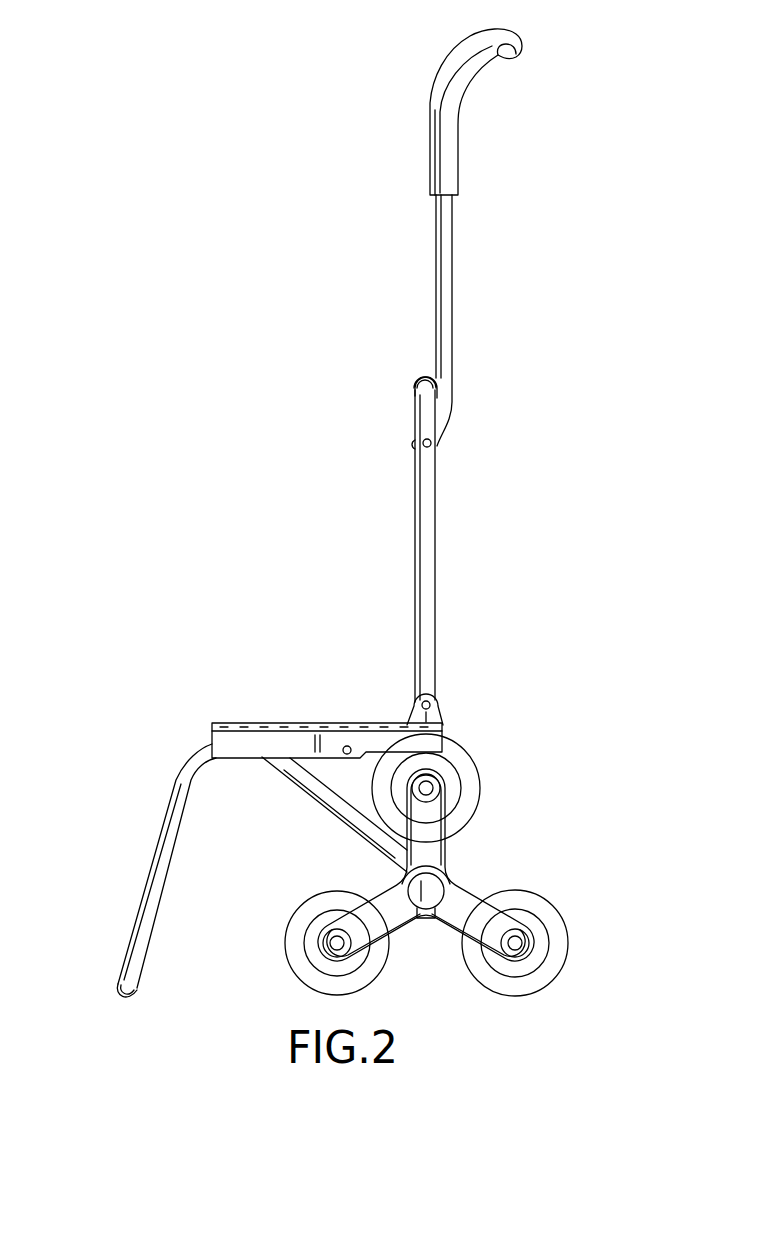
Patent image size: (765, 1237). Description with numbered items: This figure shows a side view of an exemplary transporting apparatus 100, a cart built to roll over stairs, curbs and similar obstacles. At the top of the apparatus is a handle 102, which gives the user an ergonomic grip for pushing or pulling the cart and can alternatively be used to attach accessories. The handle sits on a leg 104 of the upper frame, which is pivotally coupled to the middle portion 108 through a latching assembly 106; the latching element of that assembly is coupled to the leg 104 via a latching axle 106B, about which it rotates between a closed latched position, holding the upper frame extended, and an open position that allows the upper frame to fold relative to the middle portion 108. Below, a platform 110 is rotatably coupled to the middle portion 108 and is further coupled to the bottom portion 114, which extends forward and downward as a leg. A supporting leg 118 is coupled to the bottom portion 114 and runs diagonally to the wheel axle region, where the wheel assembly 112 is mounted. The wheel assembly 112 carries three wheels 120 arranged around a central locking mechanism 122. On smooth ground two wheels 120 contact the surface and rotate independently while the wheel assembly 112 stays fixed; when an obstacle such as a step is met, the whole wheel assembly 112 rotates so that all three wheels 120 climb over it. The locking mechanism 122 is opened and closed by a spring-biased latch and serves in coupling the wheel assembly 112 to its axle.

The transporting apparatus 100 is at (292, 132).
The handle 102 is at (507, 50).
The leg 104 is at (453, 252).
The latching assembly 106 is at (413, 373).
The latching axle 106B is at (420, 376).
The middle portion 108 is at (436, 542).
The platform 110 is at (285, 723).
The wheel assembly 112 is at (427, 868).
The bottom portion 114 is at (158, 842).
The supporting leg 118 is at (318, 802).
The wheel 120 is at (283, 950).
The locking mechanism 122 is at (465, 862).